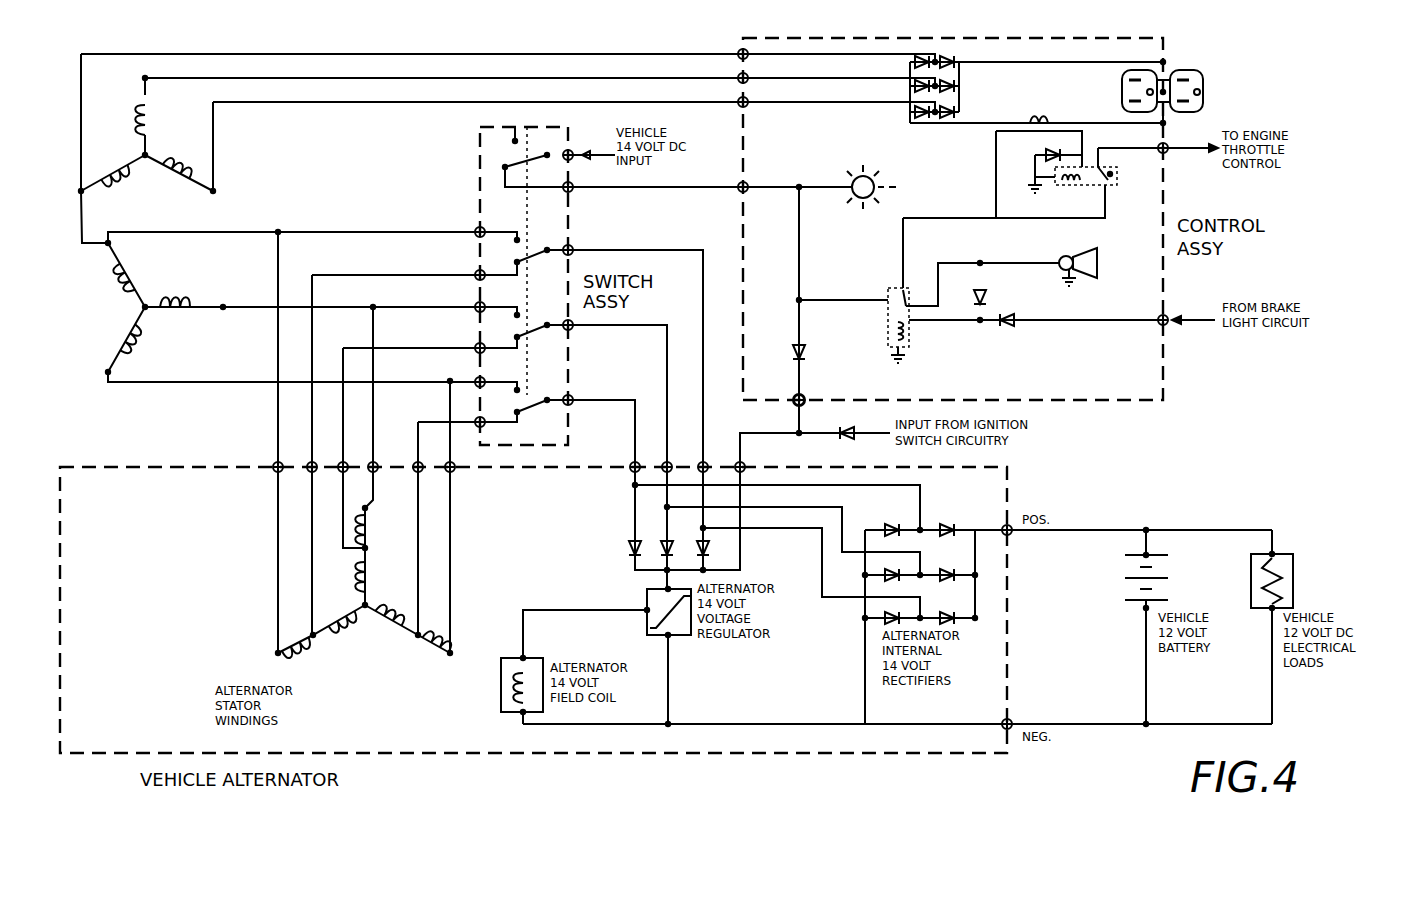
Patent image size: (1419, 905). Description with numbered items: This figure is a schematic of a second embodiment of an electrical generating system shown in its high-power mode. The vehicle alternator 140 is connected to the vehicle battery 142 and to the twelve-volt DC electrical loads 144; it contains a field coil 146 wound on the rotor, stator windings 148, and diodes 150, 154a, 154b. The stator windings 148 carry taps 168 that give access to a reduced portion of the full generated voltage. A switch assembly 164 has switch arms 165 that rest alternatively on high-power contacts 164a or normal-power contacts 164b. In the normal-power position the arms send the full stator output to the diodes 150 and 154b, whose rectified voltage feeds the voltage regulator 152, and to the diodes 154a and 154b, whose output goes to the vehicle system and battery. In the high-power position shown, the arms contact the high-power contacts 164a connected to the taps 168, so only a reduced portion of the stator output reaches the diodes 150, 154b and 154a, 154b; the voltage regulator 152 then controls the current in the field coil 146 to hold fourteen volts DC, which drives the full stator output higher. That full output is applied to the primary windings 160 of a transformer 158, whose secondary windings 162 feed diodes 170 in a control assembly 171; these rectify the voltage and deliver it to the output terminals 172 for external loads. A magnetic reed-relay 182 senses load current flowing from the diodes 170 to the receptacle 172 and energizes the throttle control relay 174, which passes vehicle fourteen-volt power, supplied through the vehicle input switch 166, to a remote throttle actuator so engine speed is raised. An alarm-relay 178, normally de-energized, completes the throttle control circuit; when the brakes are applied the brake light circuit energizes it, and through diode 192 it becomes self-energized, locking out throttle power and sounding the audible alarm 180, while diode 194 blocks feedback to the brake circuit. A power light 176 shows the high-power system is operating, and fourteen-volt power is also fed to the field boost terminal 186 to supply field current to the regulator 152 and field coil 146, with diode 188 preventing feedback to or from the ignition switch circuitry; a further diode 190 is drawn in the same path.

The vehicle alternator 140 is at (478, 756).
The vehicle battery 142 is at (1138, 630).
The 12-volt DC electrical loads 144 is at (1296, 582).
The field coil 146 is at (538, 658).
The stator windings 148 is at (372, 640).
The diodes 150 is at (625, 552).
The voltage regulator 152 is at (680, 640).
The diodes 154a is at (952, 608).
The diodes 154b is at (892, 620).
The transformer 158 is at (96, 219).
The primary windings 160 is at (130, 280).
The secondary windings 162 is at (187, 162).
The switch assembly 164 is at (588, 251).
The high-power contacts 164a is at (514, 263).
The normal-power contacts 164b is at (522, 238).
The switch arms 165 is at (514, 335).
The vehicle 14-volt input switch 166 is at (505, 155).
The taps 168 is at (311, 632).
The diodes 170 is at (970, 83).
The control assembly 171 is at (1163, 275).
The output terminals 172 is at (1180, 64).
The throttle control relay 174 is at (1120, 183).
The power light 176 is at (863, 162).
The alarm-relay 178 is at (912, 340).
The audible alarm 180 is at (1060, 252).
The magnetic reed-relay 182 is at (1032, 118).
The alternator field boost terminal 186 is at (806, 396).
The diode 188 is at (843, 438).
The diode 190 is at (804, 345).
The diode 192 is at (988, 300).
The diode 194 is at (1011, 328).